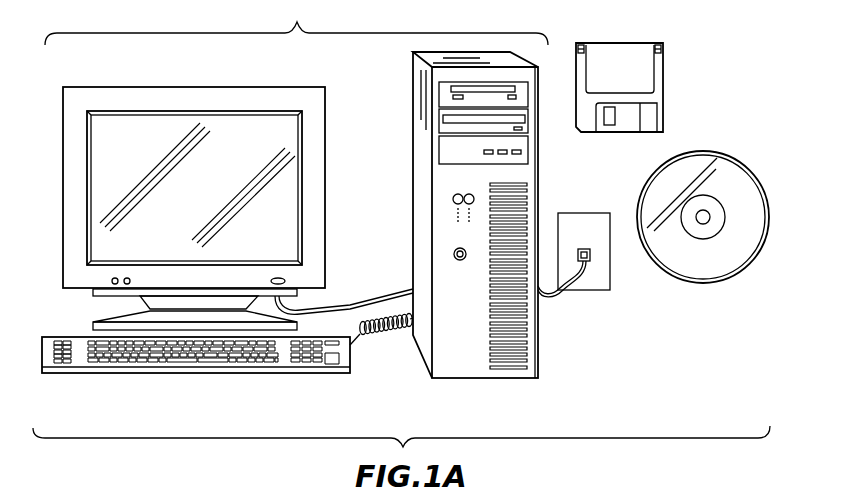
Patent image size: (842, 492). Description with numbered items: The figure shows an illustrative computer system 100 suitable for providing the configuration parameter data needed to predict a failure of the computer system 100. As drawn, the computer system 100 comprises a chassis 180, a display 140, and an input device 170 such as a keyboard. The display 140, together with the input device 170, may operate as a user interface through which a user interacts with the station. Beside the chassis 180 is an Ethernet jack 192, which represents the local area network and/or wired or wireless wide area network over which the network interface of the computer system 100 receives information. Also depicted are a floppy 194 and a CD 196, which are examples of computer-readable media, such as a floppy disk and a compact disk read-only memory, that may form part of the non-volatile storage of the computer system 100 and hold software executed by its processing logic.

The computer system 100 is at (401, 225).
The display 140 is at (83, 290).
The input device 170 is at (79, 375).
The chassis 180 is at (413, 248).
The Ethernet jack 192 is at (577, 213).
The floppy 194 is at (664, 112).
The CD 196 is at (713, 153).